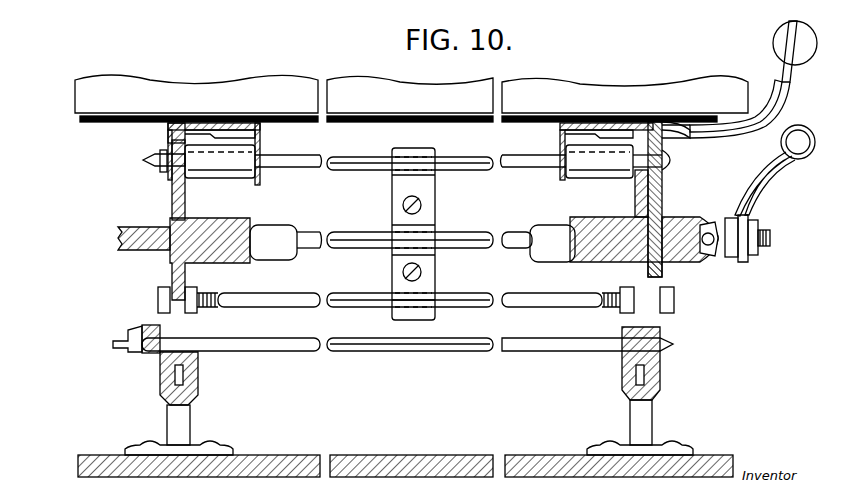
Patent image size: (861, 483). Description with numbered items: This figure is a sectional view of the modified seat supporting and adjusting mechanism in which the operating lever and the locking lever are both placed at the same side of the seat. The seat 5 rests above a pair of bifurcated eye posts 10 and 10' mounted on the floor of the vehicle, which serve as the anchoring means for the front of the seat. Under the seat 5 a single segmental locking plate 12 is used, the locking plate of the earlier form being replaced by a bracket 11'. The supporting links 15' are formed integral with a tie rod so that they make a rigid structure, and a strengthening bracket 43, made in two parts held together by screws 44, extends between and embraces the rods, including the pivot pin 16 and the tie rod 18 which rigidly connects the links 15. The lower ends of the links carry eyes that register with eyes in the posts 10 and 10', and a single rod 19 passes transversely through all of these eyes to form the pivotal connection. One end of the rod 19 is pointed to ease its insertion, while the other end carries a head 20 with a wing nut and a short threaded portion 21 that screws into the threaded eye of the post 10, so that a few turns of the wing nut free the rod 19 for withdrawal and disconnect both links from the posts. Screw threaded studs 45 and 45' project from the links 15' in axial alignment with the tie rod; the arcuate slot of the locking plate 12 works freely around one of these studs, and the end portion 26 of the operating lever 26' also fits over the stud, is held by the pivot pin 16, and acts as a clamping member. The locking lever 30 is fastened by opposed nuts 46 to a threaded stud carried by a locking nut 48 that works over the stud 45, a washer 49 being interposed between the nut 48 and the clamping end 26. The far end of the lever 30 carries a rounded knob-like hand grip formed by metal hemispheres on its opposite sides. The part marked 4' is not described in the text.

The seat 5 is at (568, 97).
The segmental locking plate 12 is at (690, 102).
The bracket 11' is at (189, 151).
The supporting link 15' is at (198, 180).
The supporting link 15 is at (624, 193).
The screw threaded stud 45' is at (151, 200).
The screw threaded stud 45 is at (690, 227).
The pivot pin 16 is at (450, 160).
The strengthening bracket 43 is at (394, 195).
The screw 44 is at (423, 205).
The tie rod 18 is at (554, 306).
The rod 19 is at (556, 352).
The head 20 is at (128, 336).
The threaded portion 21 is at (160, 360).
The eye post 10 is at (179, 403).
The eye post 10' is at (644, 391).
The clamping end of operating lever 26 is at (676, 199).
The operating lever 26' is at (743, 79).
The locking lever 30 is at (780, 183).
The locking nut 48 is at (712, 262).
The nut 46 is at (740, 260).
The bolt 4' is at (786, 239).
The washer 49 is at (665, 270).